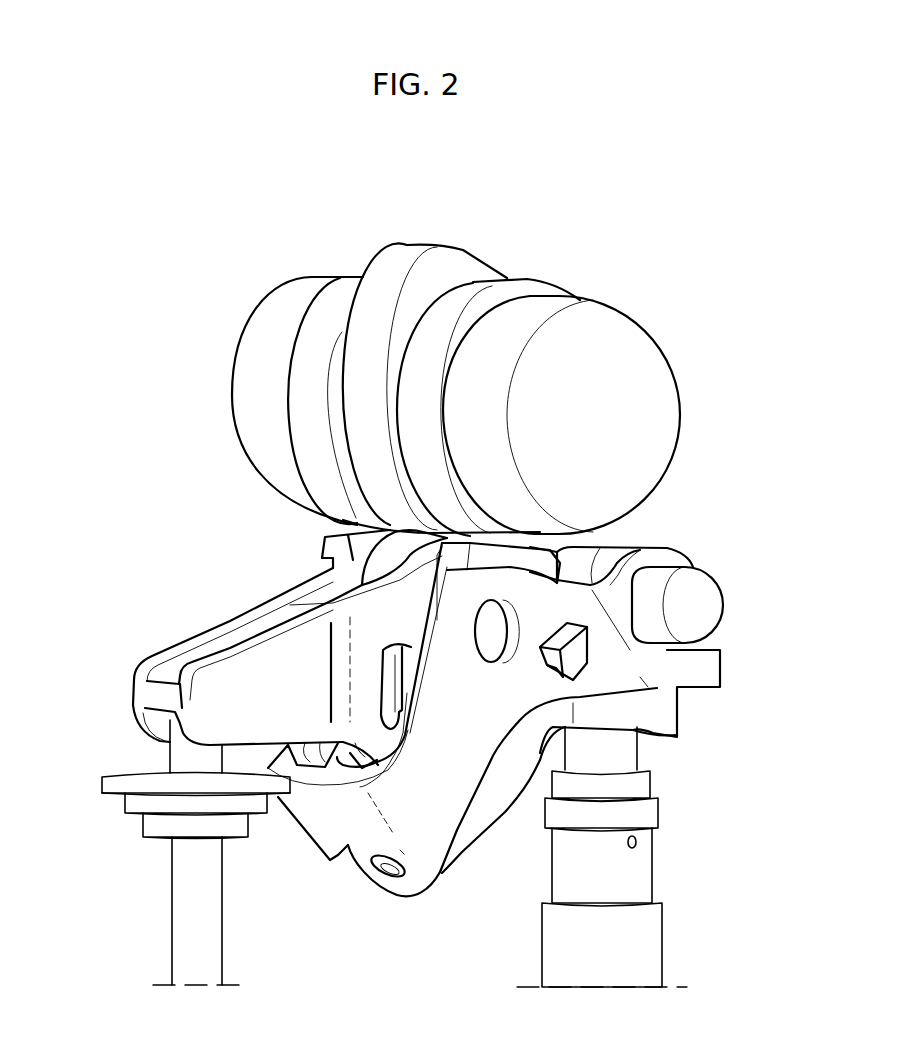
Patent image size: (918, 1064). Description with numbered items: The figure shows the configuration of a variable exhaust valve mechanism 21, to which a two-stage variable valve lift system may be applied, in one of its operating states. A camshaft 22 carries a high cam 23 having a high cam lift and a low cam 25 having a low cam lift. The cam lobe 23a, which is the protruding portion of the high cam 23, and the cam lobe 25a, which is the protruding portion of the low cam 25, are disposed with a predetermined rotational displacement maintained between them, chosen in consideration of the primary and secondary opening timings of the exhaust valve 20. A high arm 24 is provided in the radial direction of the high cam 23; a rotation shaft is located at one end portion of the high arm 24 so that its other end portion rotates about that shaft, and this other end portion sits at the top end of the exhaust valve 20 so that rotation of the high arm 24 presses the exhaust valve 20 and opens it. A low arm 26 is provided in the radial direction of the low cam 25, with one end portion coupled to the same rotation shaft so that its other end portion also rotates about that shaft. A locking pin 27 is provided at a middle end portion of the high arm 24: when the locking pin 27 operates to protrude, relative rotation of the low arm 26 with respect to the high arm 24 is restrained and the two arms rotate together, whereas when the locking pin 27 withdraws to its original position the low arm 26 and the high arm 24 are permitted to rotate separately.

The exhaust valve 20 is at (188, 920).
The variable exhaust valve mechanism 21 is at (150, 425).
The camshaft 22 is at (643, 417).
The high cam 23 is at (367, 378).
The cam lobe 23a is at (433, 282).
The high arm 24 is at (243, 670).
The low cam 25 is at (480, 293).
The cam lobe 25a is at (513, 532).
The low arm 26 is at (445, 850).
The locking pin 27 is at (388, 875).